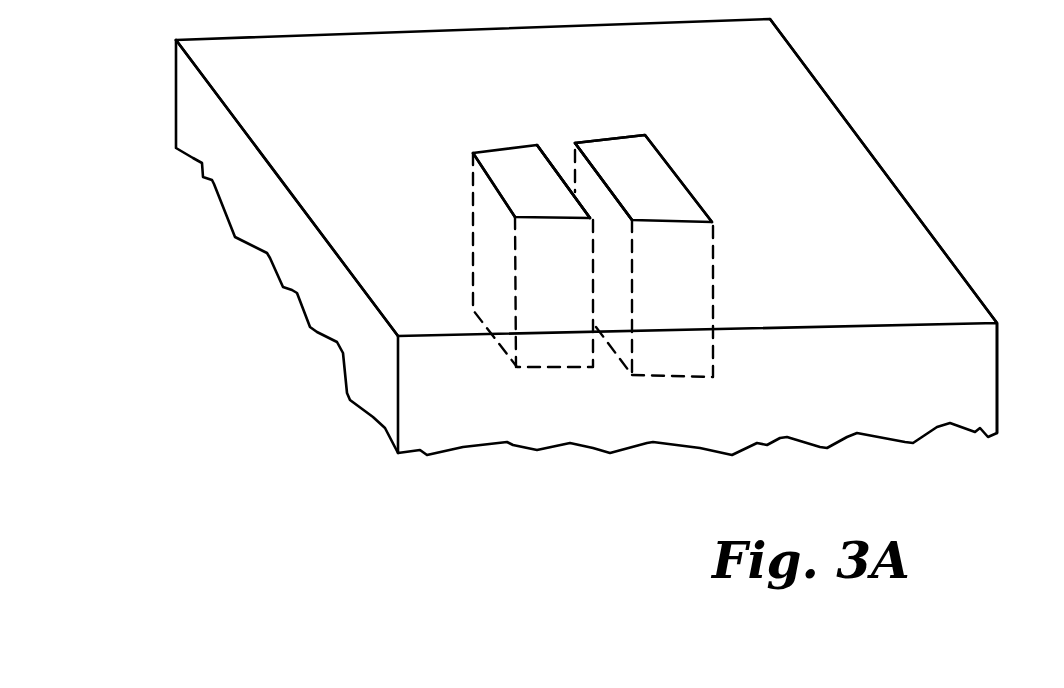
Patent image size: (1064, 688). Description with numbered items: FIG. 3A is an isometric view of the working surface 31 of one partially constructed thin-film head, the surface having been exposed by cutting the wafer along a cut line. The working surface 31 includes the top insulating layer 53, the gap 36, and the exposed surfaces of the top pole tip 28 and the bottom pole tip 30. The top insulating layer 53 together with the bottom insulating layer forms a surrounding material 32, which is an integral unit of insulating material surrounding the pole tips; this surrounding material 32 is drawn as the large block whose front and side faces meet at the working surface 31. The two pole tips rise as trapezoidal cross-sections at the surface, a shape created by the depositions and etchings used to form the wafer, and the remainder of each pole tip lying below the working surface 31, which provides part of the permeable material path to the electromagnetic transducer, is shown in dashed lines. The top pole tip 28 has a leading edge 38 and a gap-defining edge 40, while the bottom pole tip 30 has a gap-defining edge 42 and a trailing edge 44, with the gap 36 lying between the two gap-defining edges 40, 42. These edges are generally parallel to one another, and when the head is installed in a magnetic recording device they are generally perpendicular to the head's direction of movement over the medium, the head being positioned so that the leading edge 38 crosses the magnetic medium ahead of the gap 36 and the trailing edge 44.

The top pole tip 28 is at (505, 176).
The bottom pole tip 30 is at (628, 161).
The working surface 31 is at (862, 208).
The surrounding material 32 is at (804, 134).
The gap 36 is at (564, 163).
The leading edge 38 is at (471, 179).
The gap-defining edge 40 is at (563, 186).
The gap-defining edge 42 is at (614, 197).
The trailing edge 44 is at (674, 154).
The top insulating layer 53 is at (330, 185).